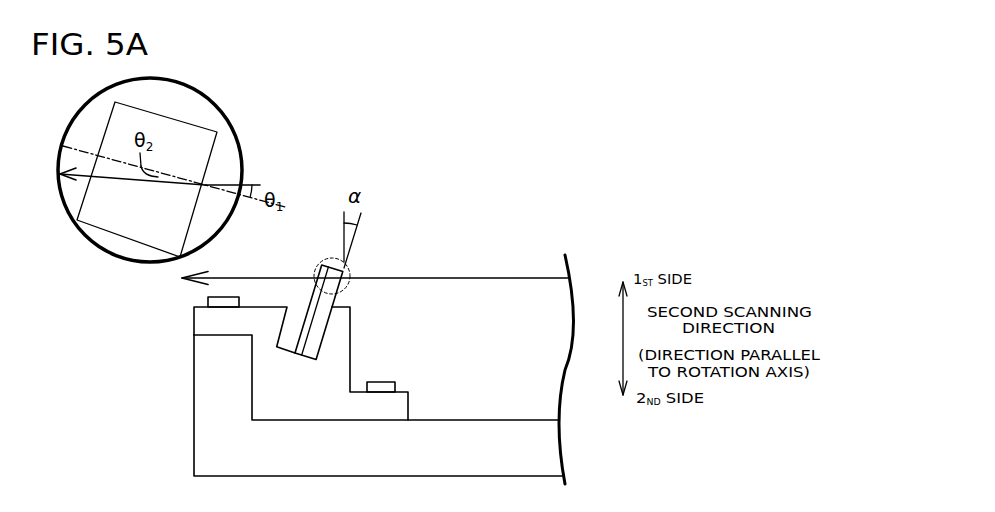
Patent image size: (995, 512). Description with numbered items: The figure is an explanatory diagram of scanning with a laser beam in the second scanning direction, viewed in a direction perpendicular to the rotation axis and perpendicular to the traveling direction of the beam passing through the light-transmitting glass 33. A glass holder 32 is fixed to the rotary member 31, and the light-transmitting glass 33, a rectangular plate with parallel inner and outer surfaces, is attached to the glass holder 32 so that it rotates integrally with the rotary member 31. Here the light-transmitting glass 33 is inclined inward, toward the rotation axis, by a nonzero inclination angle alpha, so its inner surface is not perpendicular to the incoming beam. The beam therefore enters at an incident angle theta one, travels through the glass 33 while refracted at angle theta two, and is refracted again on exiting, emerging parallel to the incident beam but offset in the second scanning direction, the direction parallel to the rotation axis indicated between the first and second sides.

The rotary member 31 is at (448, 425).
The glass holder 32 is at (345, 348).
The light-transmitting glass 33 is at (187, 132).